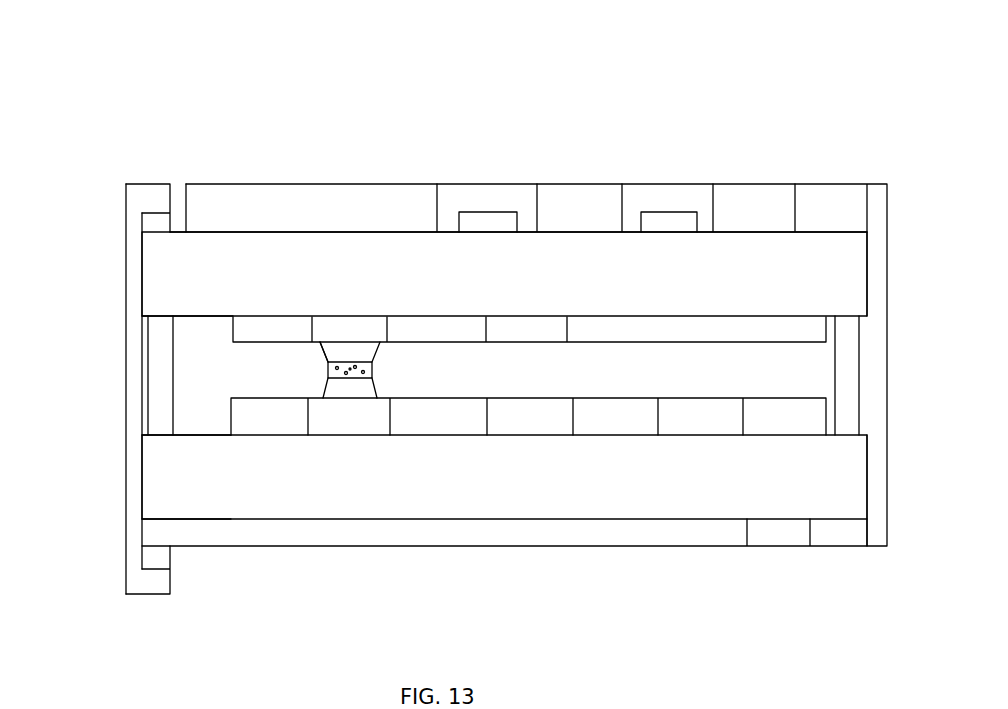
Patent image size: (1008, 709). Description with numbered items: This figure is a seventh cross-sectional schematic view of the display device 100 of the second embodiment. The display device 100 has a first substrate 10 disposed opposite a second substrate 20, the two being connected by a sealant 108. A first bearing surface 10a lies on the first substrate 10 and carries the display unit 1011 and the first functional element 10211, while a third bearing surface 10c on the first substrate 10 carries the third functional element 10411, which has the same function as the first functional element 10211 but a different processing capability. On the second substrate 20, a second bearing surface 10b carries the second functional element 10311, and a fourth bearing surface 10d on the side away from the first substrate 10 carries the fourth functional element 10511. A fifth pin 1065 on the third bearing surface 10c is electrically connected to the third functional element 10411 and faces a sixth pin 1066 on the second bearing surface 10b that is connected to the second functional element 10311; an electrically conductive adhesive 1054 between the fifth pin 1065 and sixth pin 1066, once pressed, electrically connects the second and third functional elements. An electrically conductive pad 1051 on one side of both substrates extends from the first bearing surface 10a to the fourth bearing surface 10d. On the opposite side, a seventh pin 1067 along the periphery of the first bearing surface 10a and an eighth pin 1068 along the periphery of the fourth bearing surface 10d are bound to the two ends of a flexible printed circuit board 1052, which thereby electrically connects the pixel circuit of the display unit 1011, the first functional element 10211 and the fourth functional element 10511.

The display device 100 is at (504, 107).
The first substrate 10 is at (163, 285).
The first bearing surface 10a is at (203, 226).
The second bearing surface 10b is at (221, 431).
The third bearing surface 10c is at (188, 320).
The fourth bearing surface 10d is at (187, 523).
The second substrate 20 is at (163, 482).
The sealant 108 is at (163, 400).
The display unit 1011 is at (392, 195).
The first functional element 10211 is at (494, 218).
The third functional element 10411 is at (337, 327).
The second functional element 10311 is at (707, 420).
The fourth functional element 10511 is at (790, 533).
The electrically conductive pad 1051 is at (881, 440).
The flexible printed circuit board 1052 is at (140, 362).
The electrically conductive adhesive 1054 is at (380, 380).
The fifth pin 1065 is at (328, 352).
The sixth pin 1066 is at (338, 388).
The seventh pin 1067 is at (155, 222).
The eighth pin 1068 is at (163, 589).